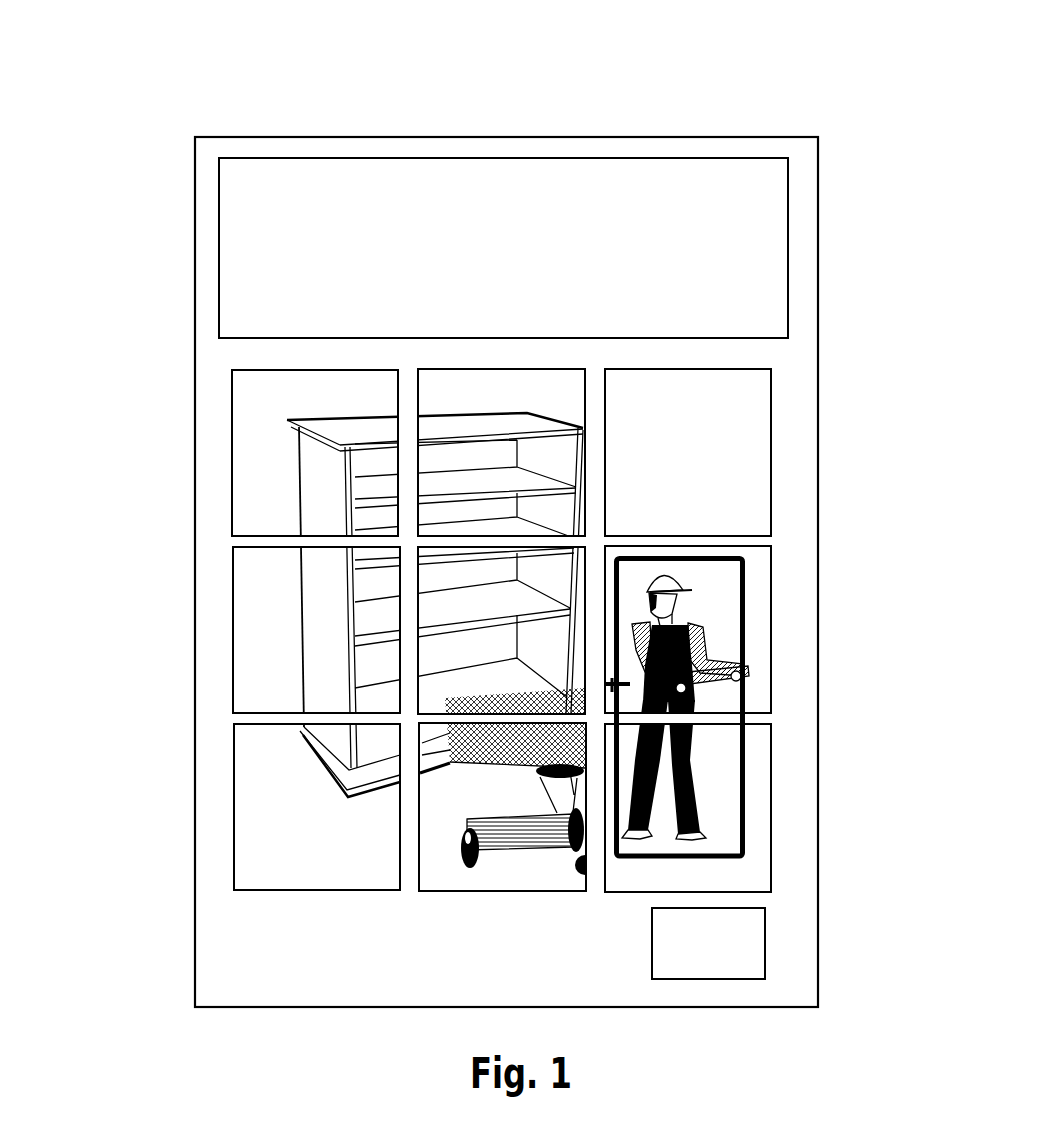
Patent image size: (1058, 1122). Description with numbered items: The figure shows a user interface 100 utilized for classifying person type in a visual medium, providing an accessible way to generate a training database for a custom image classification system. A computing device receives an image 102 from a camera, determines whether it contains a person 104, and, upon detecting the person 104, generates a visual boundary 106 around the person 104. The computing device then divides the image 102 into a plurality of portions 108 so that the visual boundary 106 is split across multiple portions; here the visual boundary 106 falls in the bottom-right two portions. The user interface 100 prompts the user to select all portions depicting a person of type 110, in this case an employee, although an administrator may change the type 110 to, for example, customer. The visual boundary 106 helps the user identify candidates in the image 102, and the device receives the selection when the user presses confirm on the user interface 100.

The user interface 100 is at (407, 130).
The image 102 is at (240, 445).
The person 104 is at (700, 614).
The visual boundary 106 is at (752, 771).
The portions 108 is at (226, 670).
The person type 110 is at (212, 229).